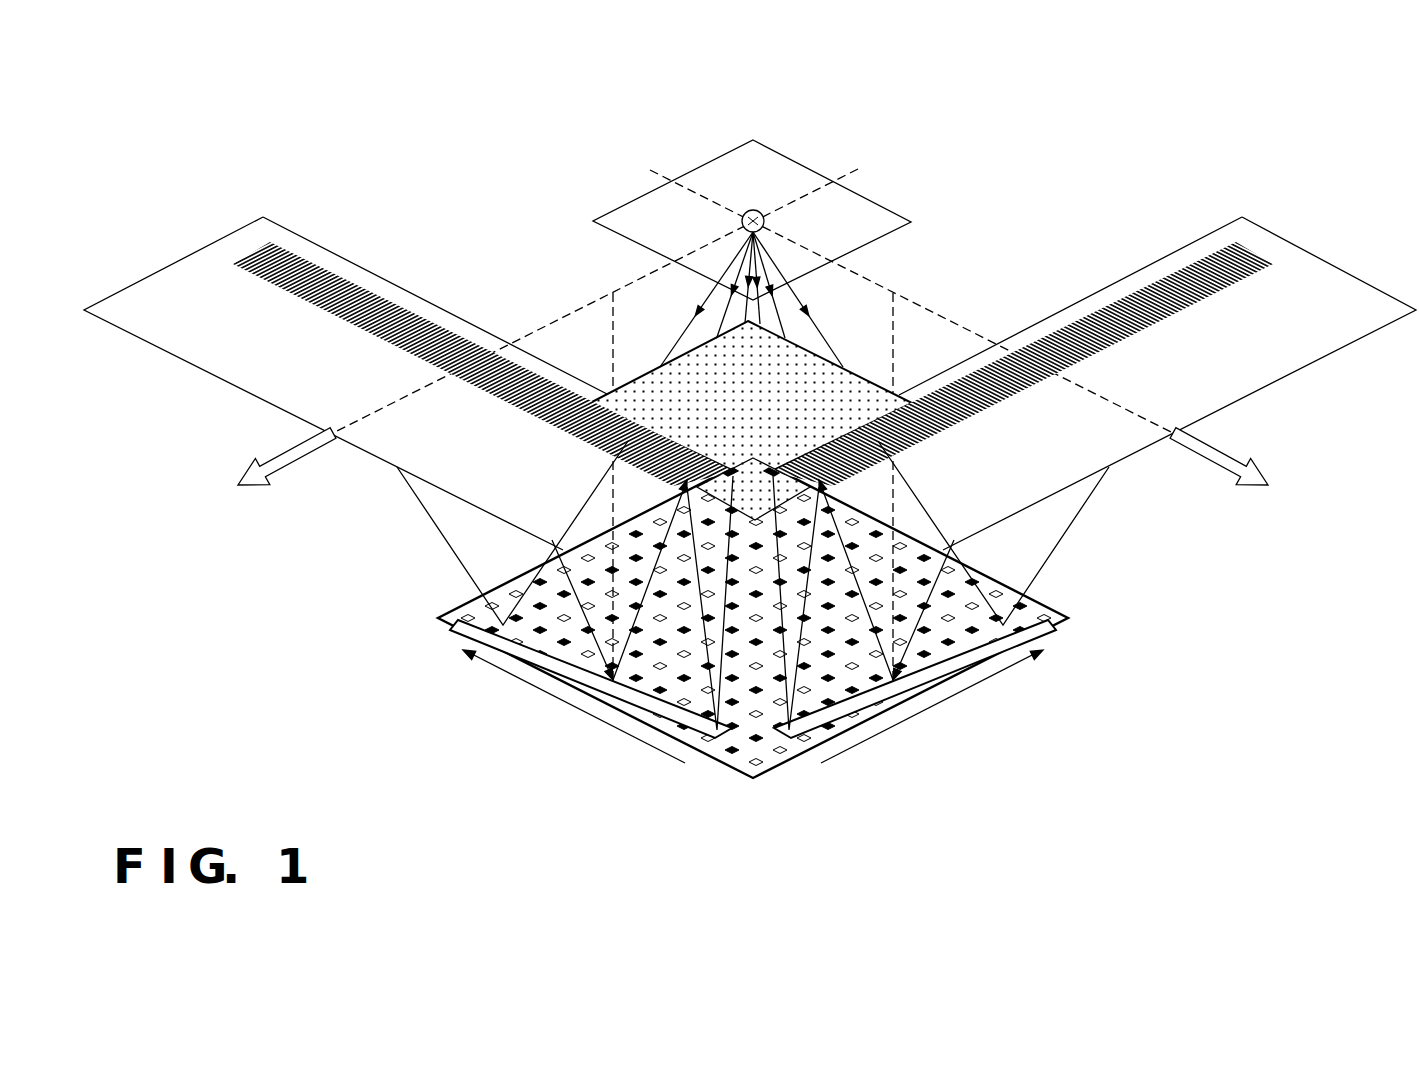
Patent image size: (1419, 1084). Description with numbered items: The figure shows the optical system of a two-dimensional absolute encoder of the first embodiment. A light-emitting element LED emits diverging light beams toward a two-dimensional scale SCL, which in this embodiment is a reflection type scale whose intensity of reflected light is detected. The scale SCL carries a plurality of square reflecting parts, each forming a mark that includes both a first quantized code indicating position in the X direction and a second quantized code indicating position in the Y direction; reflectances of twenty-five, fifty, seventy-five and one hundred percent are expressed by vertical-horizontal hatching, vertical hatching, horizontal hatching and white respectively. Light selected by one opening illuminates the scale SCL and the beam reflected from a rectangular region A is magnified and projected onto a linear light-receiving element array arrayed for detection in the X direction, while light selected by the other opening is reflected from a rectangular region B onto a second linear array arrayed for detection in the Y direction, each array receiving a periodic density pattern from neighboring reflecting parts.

The light-emitting element LED is at (752, 253).
The two-dimensional scale SCL is at (753, 628).
The rectangular region A is at (805, 742).
The rectangular region B is at (458, 620).
The X direction X is at (932, 706).
The Y direction Y is at (574, 706).